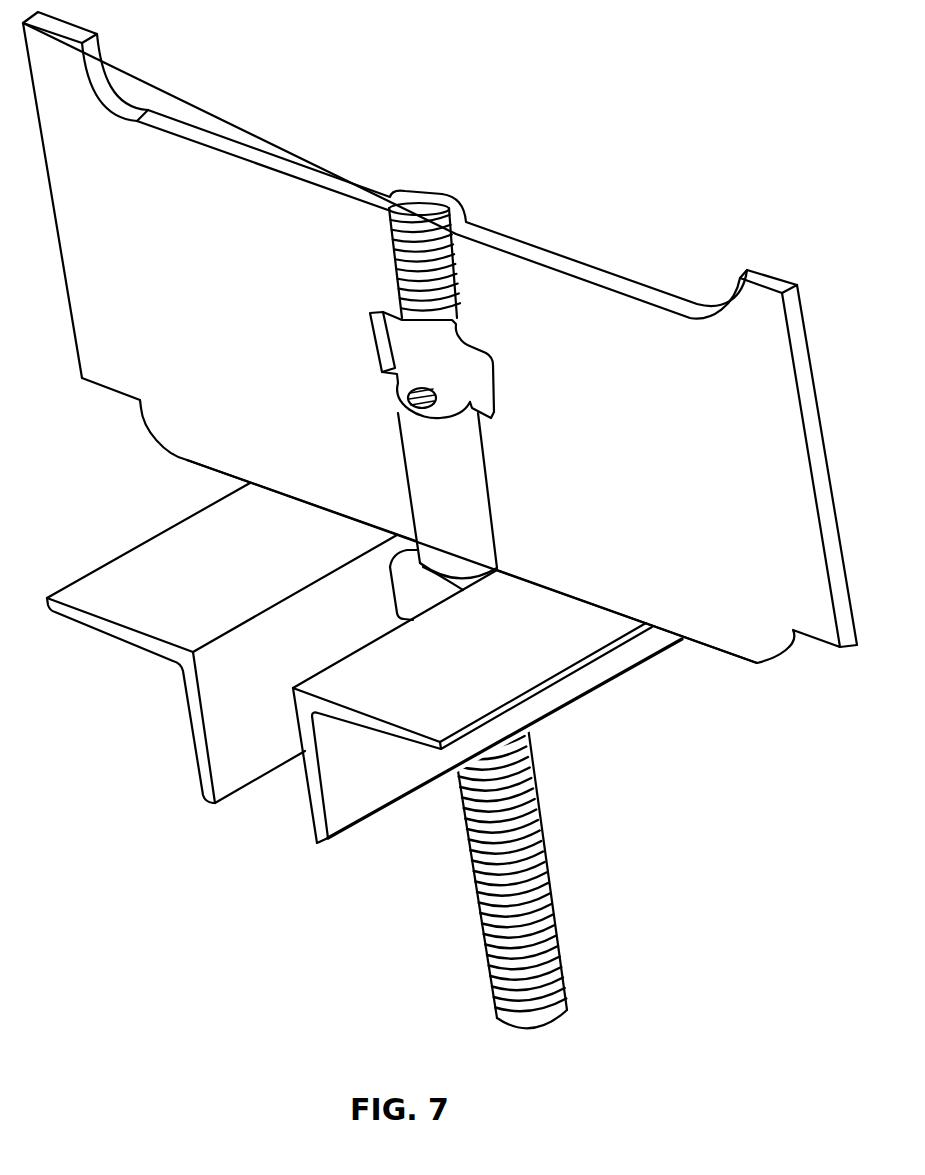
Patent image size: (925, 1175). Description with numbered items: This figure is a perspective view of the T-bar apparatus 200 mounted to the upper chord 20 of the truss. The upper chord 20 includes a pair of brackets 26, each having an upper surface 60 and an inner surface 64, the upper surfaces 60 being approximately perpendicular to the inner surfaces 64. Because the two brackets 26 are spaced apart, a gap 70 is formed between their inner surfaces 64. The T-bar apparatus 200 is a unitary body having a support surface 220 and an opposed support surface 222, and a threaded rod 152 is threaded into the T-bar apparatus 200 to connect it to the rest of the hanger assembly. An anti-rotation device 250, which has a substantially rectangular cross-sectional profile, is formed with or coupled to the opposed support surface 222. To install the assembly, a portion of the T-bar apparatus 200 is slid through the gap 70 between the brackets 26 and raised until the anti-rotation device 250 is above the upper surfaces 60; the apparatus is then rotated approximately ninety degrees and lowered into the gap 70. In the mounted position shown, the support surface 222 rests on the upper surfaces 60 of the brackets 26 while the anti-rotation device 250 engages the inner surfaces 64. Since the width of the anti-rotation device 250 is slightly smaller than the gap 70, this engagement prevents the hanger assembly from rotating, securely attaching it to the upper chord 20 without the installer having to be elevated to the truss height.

The upper chord 20 is at (116, 784).
The bracket 26 is at (187, 718).
The upper surface 60 is at (214, 588).
The inner surface 64 is at (249, 678).
The gap 70 is at (264, 803).
The threaded rod 152 is at (555, 897).
The T-bar apparatus 200 is at (625, 310).
The support surface 220 is at (493, 243).
The opposed support surface 222 is at (715, 653).
The anti-rotation device 250 is at (404, 586).